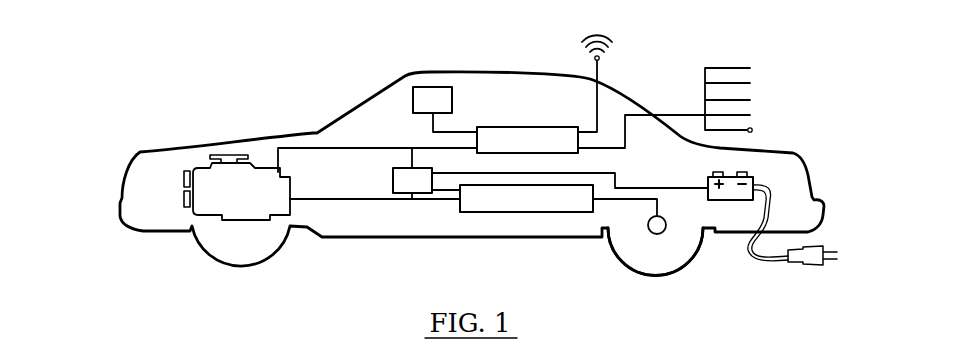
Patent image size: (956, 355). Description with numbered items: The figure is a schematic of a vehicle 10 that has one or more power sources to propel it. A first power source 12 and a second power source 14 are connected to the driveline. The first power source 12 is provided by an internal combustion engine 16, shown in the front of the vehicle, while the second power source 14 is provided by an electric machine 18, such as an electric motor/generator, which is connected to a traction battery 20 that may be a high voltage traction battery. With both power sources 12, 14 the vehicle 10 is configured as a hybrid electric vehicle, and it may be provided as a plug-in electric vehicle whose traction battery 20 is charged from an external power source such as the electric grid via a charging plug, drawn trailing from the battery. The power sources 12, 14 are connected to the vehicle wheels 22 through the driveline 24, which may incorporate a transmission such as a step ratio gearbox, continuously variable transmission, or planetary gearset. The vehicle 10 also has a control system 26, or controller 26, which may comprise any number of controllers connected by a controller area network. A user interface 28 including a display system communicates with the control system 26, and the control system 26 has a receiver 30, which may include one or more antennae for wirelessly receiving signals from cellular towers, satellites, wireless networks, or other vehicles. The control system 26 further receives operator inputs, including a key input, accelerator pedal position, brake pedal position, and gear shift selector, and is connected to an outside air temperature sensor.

The vehicle 10 is at (274, 55).
The first power source 12 is at (170, 180).
The second power source 14 is at (399, 160).
The internal combustion engine 16 is at (238, 221).
The electric machine 18 is at (415, 194).
The traction battery 20 is at (730, 200).
The vehicle wheels 22 is at (625, 260).
The driveline 24 is at (520, 213).
The control system 26 is at (525, 127).
The user interface 28 is at (437, 87).
The receiver 30 is at (599, 63).